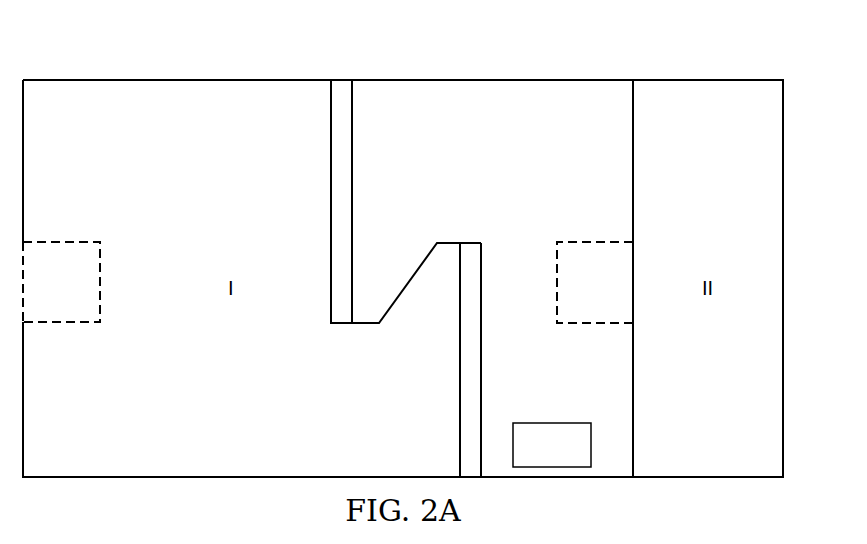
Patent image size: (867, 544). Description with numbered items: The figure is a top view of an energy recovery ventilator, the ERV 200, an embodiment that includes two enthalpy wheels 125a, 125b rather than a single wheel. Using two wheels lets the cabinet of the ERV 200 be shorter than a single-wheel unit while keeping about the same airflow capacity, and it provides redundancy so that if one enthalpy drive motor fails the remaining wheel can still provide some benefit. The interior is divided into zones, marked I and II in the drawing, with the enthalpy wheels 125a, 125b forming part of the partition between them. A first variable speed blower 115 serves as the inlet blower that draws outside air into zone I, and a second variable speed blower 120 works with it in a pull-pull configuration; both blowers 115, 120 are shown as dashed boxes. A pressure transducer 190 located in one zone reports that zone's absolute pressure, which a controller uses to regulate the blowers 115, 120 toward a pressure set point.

The ERV 200 is at (203, 48).
The enthalpy wheel 125a is at (352, 141).
The enthalpy wheel 125b is at (481, 352).
The variable speed blower 120 is at (100, 278).
The variable speed blower 115 is at (590, 242).
The pressure transducer 190 is at (533, 456).